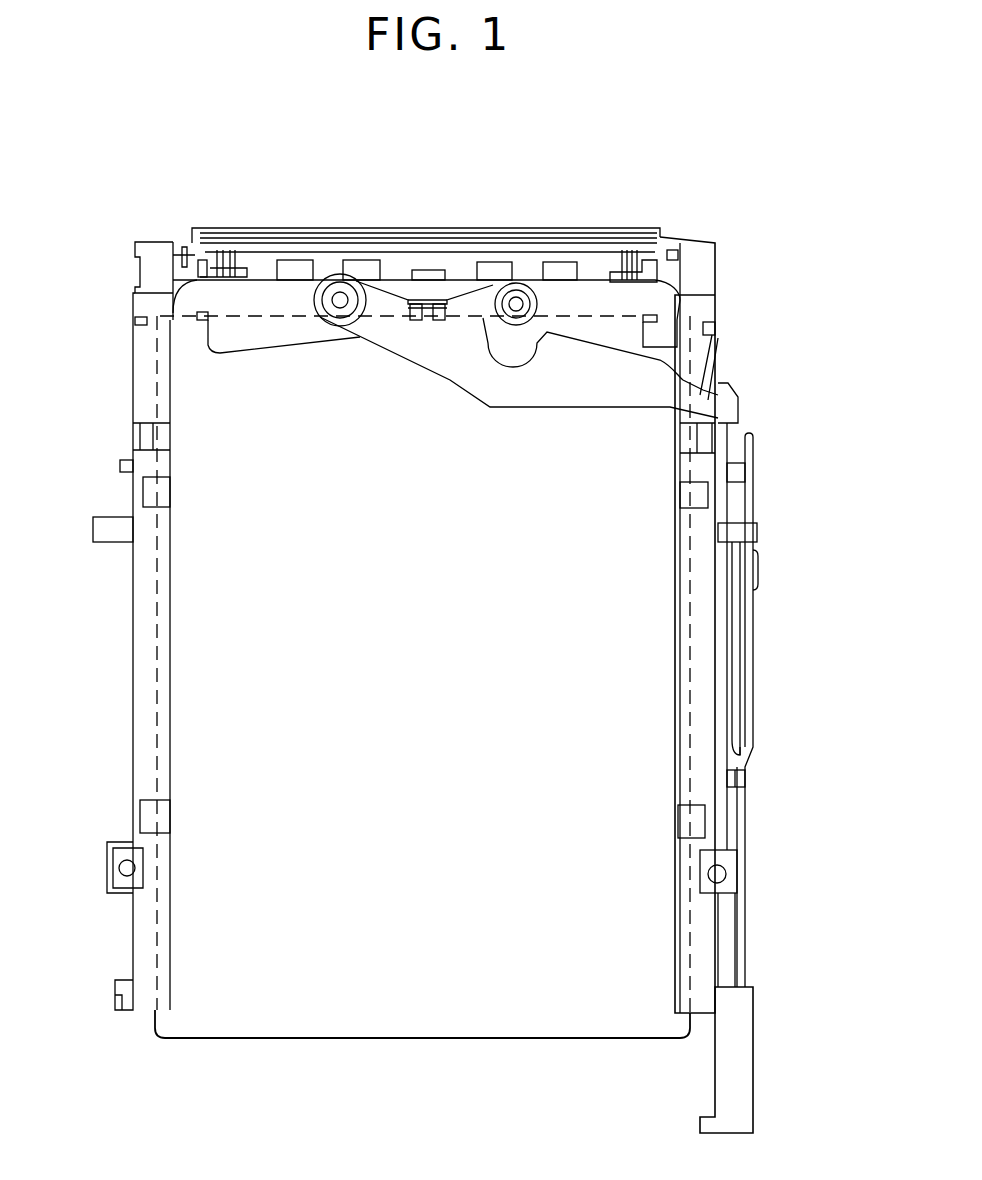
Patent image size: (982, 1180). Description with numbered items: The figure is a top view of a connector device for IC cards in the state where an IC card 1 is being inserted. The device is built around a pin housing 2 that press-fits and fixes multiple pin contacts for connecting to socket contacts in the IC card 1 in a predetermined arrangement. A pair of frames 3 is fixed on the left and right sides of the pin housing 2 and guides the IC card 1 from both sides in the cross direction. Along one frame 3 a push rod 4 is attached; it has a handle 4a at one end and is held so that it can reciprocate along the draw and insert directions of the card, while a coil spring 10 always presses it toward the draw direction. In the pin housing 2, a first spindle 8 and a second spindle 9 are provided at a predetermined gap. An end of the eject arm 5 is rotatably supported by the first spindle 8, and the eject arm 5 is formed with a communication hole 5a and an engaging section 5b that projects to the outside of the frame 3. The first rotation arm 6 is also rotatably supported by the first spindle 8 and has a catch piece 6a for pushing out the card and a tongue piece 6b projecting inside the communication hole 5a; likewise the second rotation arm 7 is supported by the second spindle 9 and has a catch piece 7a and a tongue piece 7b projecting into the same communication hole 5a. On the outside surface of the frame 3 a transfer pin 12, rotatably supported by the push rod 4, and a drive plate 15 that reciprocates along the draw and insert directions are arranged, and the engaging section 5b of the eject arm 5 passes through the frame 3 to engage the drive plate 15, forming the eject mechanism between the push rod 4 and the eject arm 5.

The IC card 1 is at (290, 968).
The pin housing 2 is at (527, 260).
The frame 3 is at (143, 617).
The push rod 4 is at (748, 920).
The handle 4a is at (742, 1070).
The eject arm 5 is at (571, 324).
The communication hole 5a is at (410, 302).
The engaging section 5b is at (730, 390).
The first rotation arm 6 is at (241, 290).
The catch piece 6a is at (197, 317).
The tongue piece 6b is at (413, 322).
The second rotation arm 7 is at (616, 305).
The catch piece 7a is at (667, 318).
The tongue piece 7b is at (438, 322).
The first spindle 8 is at (338, 287).
The second spindle 9 is at (513, 303).
The coil spring 10 is at (723, 823).
The transfer pin 12 is at (737, 658).
The drive plate 15 is at (720, 437).